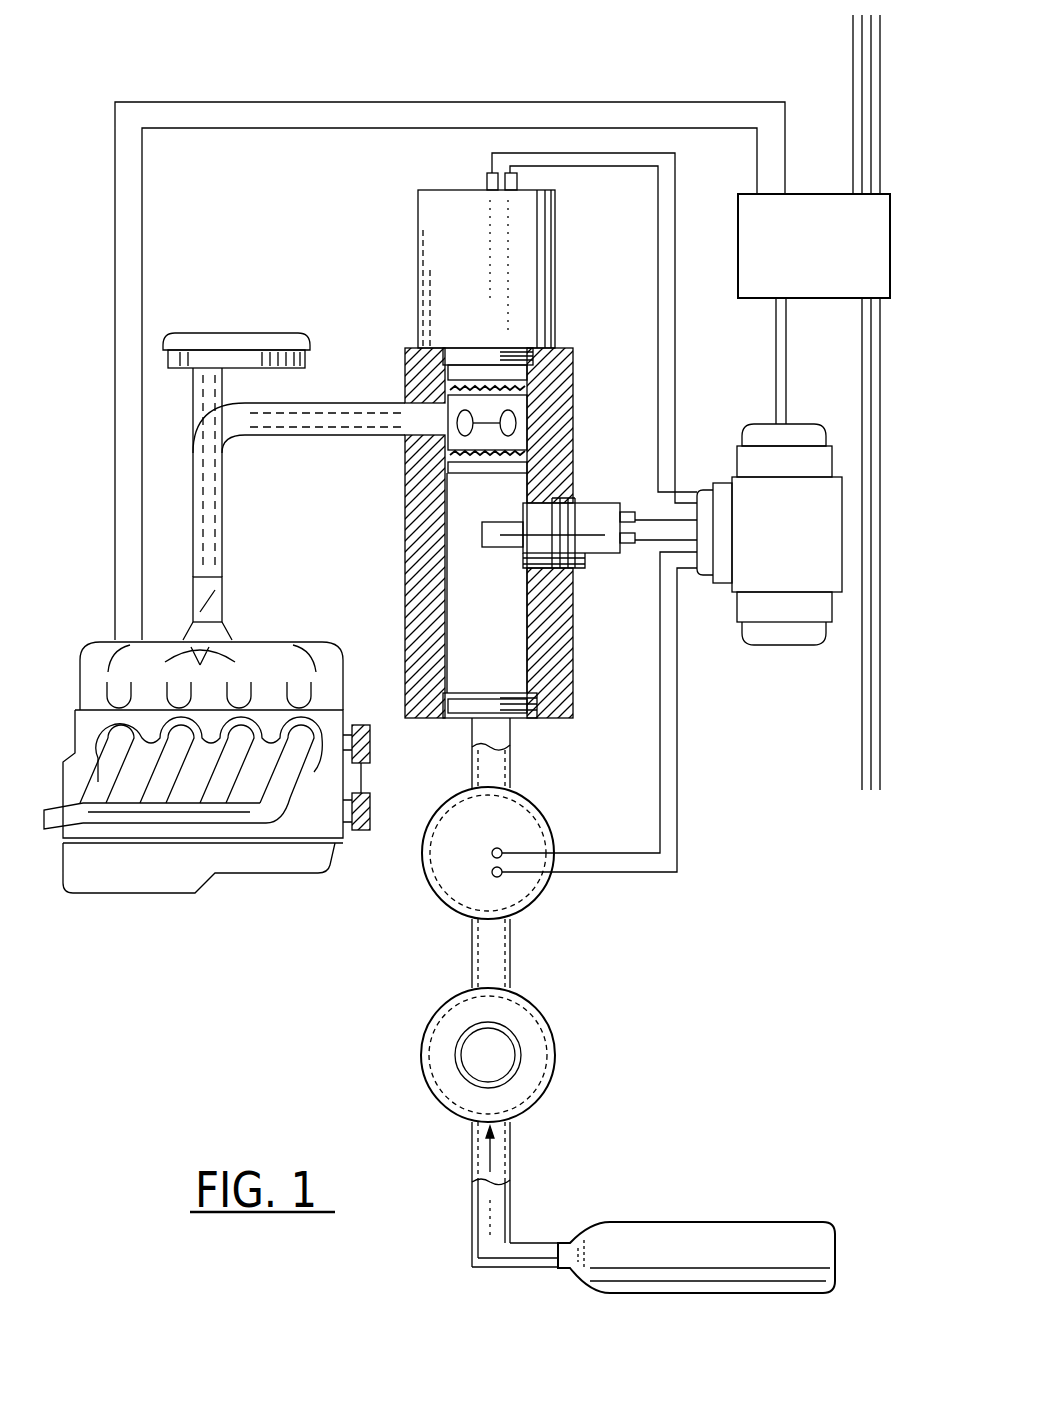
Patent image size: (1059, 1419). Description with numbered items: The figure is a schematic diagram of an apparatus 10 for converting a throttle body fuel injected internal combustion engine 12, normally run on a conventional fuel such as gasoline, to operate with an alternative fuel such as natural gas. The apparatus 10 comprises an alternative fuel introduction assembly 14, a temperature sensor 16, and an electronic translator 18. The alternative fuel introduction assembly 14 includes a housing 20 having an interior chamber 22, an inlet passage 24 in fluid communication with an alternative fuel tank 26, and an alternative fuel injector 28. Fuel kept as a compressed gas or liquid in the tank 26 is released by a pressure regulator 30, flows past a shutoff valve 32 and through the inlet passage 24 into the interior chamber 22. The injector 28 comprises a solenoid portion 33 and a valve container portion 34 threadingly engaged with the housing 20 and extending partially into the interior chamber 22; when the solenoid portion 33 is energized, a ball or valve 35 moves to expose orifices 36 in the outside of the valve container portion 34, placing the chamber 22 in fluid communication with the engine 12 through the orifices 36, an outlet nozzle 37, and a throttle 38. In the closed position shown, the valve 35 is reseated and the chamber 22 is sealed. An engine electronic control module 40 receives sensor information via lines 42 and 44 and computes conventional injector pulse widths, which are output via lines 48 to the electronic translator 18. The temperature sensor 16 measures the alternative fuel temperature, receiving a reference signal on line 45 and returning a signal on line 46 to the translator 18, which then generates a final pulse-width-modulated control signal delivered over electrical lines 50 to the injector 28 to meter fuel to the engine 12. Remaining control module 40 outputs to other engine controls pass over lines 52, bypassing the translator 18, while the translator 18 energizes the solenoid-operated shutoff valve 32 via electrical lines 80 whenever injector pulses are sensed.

The apparatus 10 is at (478, 45).
The internal combustion engine 12 is at (226, 897).
The alternative fuel introduction assembly 14 is at (392, 224).
The temperature sensor 16 is at (595, 597).
The electronic translator 18 is at (724, 655).
The housing 20 is at (405, 503).
The interior chamber 22 is at (458, 578).
The inlet passage 24 is at (505, 745).
The alternative fuel tank 26 is at (710, 1221).
The alternative fuel injector 28 is at (457, 212).
The pressure regulator 30 is at (563, 1046).
The shutoff valve 32 is at (560, 900).
The solenoid portion 33 is at (558, 223).
The valve container portion 34 is at (457, 354).
The valve 35 is at (543, 395).
The orifices 36 is at (482, 428).
The outlet nozzle 37 is at (413, 408).
The throttle 38 is at (218, 604).
The electronic control module 40 is at (800, 192).
The line 42 is at (142, 219).
The line 44 is at (852, 45).
The line 45 is at (646, 518).
The line 46 is at (652, 548).
The lines 48 is at (775, 338).
The electrical lines 50 is at (677, 283).
The lines 52 is at (880, 712).
The electrical lines 80 is at (665, 798).